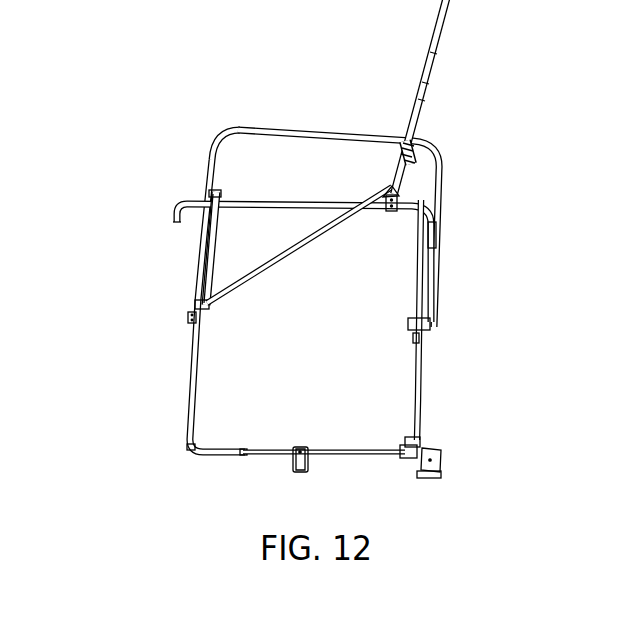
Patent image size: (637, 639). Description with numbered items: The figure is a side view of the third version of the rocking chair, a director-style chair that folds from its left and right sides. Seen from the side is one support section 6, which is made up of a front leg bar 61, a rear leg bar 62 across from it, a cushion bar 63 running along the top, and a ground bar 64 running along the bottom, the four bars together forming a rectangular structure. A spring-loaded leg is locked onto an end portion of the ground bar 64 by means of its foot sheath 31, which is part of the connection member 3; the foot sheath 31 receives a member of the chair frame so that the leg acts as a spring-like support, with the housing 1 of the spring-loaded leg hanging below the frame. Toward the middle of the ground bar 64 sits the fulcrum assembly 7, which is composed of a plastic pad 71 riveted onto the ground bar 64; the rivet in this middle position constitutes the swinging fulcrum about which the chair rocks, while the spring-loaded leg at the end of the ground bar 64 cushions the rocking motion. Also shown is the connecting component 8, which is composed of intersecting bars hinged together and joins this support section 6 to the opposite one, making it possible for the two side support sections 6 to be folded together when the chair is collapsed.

The housing 1 is at (443, 458).
The connection member 3 is at (405, 461).
The foot sheath 31 is at (407, 437).
The support section 6 is at (277, 292).
The front leg bar 61 is at (197, 386).
The rear leg bar 62 is at (428, 378).
The cushion bar 63 is at (286, 204).
The ground bar 64 is at (257, 450).
The fulcrum assembly 7 is at (290, 468).
The plastic pad 71 is at (309, 476).
The connecting component 8 is at (189, 285).